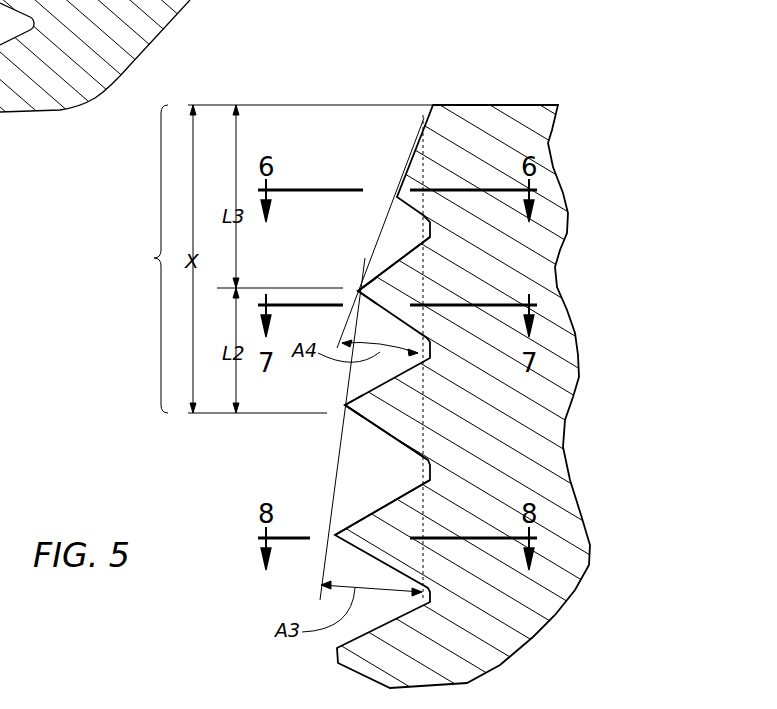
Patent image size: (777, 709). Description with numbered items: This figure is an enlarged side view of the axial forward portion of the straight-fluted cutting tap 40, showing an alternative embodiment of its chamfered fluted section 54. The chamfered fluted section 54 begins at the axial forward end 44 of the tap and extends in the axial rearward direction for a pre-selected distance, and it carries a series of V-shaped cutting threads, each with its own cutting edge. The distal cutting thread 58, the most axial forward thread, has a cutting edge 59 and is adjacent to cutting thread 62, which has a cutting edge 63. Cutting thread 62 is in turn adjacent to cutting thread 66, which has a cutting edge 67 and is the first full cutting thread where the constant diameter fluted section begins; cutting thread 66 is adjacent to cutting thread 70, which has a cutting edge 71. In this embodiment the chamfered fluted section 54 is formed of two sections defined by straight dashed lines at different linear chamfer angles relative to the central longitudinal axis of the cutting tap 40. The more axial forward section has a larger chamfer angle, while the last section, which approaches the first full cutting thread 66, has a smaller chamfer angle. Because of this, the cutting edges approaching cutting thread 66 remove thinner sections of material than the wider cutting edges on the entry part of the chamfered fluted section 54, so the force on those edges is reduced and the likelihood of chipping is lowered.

The straight-fluted cutting tap 40 is at (272, 52).
The axial forward end 44 is at (492, 104).
The chamfered fluted section 54 is at (148, 259).
The distal cutting thread 58 is at (437, 150).
The cutting edge 59 is at (402, 176).
The cutting thread 62 is at (370, 267).
The cutting edge 63 is at (357, 286).
The cutting thread 66 is at (348, 403).
The cutting edge 67 is at (346, 411).
The cutting thread 70 is at (364, 534).
The cutting edge 71 is at (332, 540).